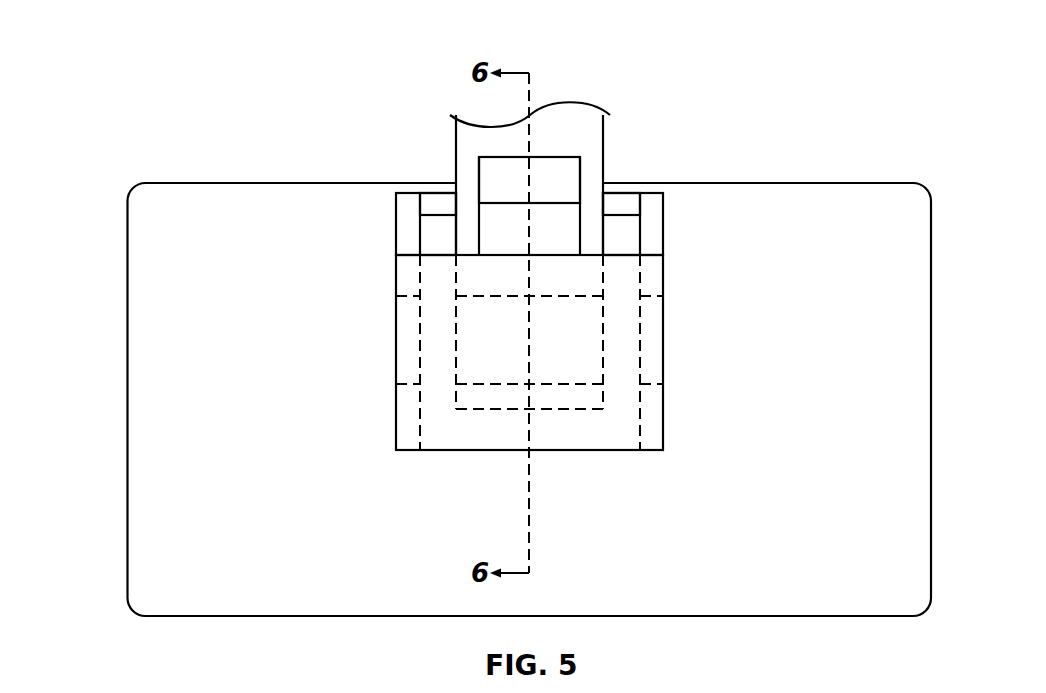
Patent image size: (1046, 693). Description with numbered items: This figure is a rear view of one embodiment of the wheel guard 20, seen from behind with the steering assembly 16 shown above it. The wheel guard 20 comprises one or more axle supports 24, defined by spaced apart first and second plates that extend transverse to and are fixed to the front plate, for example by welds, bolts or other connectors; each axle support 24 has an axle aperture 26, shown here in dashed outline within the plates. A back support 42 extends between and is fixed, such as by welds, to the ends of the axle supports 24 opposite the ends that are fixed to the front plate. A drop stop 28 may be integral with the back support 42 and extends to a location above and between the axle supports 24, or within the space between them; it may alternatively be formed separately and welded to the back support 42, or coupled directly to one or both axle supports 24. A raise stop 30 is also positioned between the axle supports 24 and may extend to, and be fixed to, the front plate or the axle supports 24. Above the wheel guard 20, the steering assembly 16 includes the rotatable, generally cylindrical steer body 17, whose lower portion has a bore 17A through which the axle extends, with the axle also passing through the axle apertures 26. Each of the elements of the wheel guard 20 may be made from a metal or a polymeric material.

The steering assembly 16 is at (593, 143).
The steer body 17 is at (603, 275).
The bore 17A is at (572, 380).
The wheel guard 20 is at (107, 634).
The axle support 24 is at (405, 238).
The axle aperture 26 is at (416, 290).
The drop stop 28 is at (562, 178).
The raise stop 30 is at (438, 203).
The back support 42 is at (472, 360).